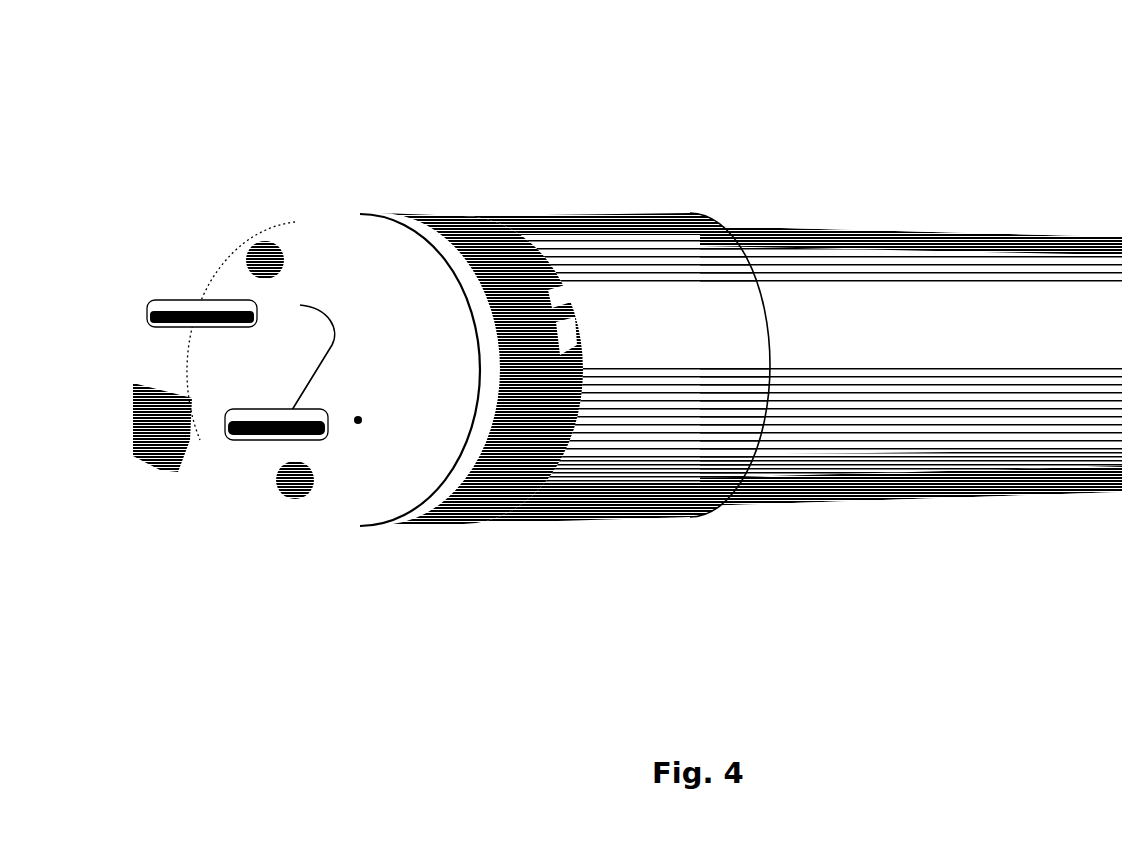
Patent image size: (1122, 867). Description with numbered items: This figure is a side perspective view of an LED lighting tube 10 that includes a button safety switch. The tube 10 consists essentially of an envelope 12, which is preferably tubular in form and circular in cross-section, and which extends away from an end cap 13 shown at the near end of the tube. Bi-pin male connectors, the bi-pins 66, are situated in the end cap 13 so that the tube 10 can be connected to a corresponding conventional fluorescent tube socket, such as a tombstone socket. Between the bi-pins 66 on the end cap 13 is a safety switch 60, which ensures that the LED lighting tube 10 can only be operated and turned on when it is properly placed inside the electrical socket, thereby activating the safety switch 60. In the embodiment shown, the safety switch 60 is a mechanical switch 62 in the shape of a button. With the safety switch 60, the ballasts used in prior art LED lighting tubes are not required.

The LED lighting tube 10 is at (705, 145).
The envelope 12 is at (880, 498).
The end cap 13 is at (303, 503).
The safety switch 60 is at (221, 421).
The mechanical switch 62 is at (230, 388).
The bi-pins 66 is at (150, 320).